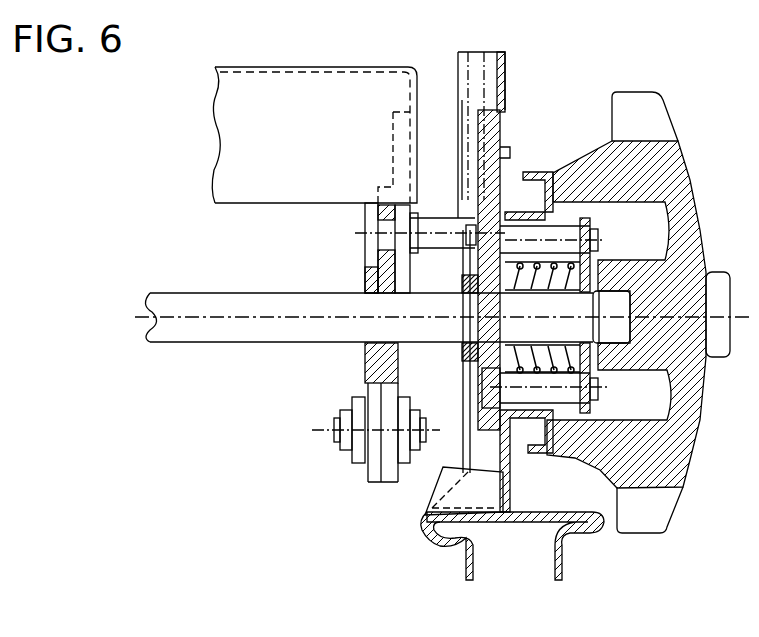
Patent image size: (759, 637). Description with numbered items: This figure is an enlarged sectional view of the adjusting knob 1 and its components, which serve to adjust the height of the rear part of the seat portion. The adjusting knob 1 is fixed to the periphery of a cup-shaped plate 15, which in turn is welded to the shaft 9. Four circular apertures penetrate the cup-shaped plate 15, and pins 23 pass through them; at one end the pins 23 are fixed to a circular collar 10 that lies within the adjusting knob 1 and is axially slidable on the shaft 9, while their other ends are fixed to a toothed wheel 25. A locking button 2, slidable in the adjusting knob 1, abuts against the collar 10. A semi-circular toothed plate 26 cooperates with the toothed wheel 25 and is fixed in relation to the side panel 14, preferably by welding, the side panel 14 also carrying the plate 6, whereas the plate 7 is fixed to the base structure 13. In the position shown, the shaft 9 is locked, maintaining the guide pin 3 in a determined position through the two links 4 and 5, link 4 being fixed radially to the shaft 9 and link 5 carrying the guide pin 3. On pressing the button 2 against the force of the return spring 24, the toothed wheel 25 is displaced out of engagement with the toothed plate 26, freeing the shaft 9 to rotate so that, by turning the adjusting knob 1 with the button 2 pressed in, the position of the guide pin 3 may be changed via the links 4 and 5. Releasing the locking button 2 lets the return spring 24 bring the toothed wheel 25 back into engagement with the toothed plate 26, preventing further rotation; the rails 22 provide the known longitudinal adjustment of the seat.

The adjusting knob 1 is at (668, 125).
The locking button 2 is at (732, 330).
The guide pin 3 is at (442, 218).
The link 4 is at (365, 358).
The link 5 is at (390, 478).
The plate 6 is at (468, 155).
The plate 7 is at (403, 272).
The shaft 9 is at (218, 344).
The circular collar 10 is at (590, 220).
The base structure 13 is at (430, 60).
The side panel 14 is at (505, 63).
The cup-shaped plate 15 is at (540, 172).
The rails 22 is at (560, 562).
The pins 23 is at (565, 395).
The return spring 24 is at (520, 420).
The toothed wheel 25 is at (463, 420).
The semi-circular toothed plate 26 is at (490, 132).